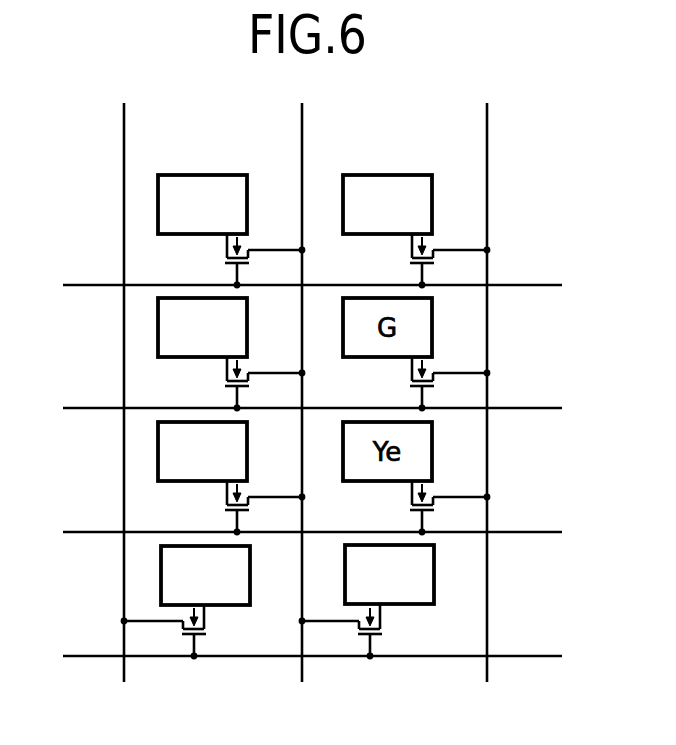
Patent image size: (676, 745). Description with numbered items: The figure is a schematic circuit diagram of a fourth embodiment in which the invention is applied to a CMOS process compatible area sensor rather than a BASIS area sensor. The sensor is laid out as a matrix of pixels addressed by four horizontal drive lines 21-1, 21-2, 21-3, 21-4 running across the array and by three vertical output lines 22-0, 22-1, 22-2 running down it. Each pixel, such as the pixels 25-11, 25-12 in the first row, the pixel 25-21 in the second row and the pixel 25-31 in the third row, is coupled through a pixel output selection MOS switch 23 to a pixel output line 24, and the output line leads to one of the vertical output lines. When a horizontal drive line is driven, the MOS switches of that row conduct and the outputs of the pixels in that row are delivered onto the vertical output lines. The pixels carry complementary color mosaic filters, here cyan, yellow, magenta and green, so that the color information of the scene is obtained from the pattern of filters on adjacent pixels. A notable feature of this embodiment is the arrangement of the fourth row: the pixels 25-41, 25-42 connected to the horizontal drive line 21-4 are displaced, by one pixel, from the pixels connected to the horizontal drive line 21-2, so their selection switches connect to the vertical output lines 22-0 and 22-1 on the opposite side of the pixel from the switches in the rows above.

The horizontal drive line 21-1 is at (515, 285).
The horizontal drive line 21-2 is at (515, 408).
The horizontal drive line 21-3 is at (515, 532).
The horizontal drive line 21-4 is at (515, 656).
The vertical output line 22-0 is at (124, 187).
The vertical output line 22-1 is at (303, 171).
The vertical output line 22-2 is at (488, 171).
The pixel output selection MOS switch 23 is at (410, 262).
The pixel output line 24 is at (468, 250).
The pixel 25-11 is at (232, 174).
The pixel 25-12 is at (422, 174).
The pixel 25-21 is at (158, 318).
The pixel 25-31 is at (158, 441).
The pixel 25-41 is at (161, 565).
The pixel 25-42 is at (434, 563).